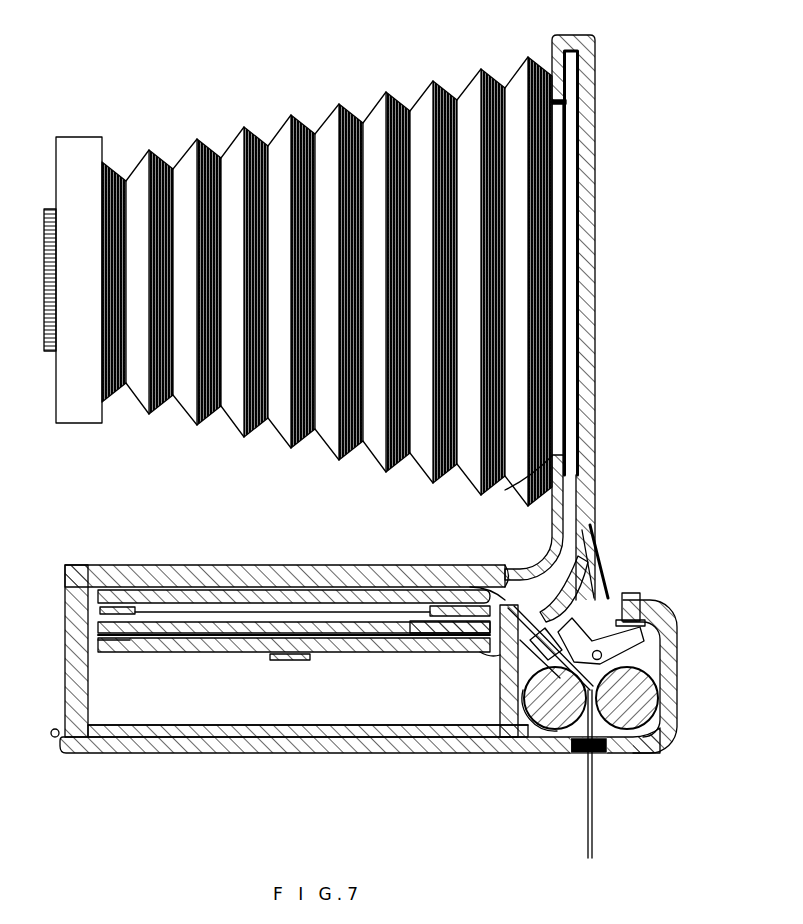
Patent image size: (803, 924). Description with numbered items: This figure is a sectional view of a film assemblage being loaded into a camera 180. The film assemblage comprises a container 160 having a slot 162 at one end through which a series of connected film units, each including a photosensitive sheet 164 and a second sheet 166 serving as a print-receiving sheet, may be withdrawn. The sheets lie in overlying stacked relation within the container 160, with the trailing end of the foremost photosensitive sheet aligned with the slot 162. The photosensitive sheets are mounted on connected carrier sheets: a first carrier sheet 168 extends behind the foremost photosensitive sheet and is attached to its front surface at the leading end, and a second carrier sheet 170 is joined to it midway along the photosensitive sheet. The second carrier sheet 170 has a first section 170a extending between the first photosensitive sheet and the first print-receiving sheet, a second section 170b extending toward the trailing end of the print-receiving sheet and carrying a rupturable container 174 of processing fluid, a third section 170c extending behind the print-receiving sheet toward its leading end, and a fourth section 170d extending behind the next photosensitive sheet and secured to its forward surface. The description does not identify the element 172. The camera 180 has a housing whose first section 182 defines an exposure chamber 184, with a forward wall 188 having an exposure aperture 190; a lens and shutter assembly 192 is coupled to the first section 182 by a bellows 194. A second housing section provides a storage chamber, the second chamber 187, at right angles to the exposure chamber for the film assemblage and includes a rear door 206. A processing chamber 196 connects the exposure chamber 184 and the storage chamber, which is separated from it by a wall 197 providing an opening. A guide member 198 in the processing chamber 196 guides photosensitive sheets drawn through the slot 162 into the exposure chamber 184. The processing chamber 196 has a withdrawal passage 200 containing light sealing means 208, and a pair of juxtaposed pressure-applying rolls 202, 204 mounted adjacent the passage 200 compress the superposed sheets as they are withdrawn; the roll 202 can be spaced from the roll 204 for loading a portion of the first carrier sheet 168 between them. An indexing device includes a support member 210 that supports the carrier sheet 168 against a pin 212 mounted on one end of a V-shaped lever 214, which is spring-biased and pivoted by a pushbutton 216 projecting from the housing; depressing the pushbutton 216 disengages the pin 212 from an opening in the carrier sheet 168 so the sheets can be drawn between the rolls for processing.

The container 160 is at (355, 664).
The slot 162 is at (513, 565).
The photosensitive sheet 164 is at (220, 620).
The second sheet 166 is at (299, 611).
The first carrier sheet 168 is at (594, 832).
The second carrier sheet 170 is at (330, 645).
The first section 170a is at (315, 606).
The second section 170b is at (397, 604).
The third section 170c is at (218, 654).
The fourth section 170d is at (150, 652).
The spacer plate 172 is at (175, 590).
The rupturable container 174 is at (455, 590).
The camera 180 is at (598, 713).
The first housing section 182 is at (561, 328).
The exposure chamber 184 is at (578, 375).
The second chamber 187 is at (245, 738).
The forward wall 188 is at (548, 100).
The exposure aperture 190 is at (566, 112).
The lens and shutter assembly 192 is at (92, 143).
The bellows 194 is at (260, 140).
The processing chamber 196 is at (598, 580).
The wall 197 is at (485, 660).
The guide member 198 is at (586, 553).
The withdrawal passage 200 is at (585, 755).
The pressure-applying roll 202 is at (555, 730).
The pressure-applying roll 204 is at (660, 735).
The rear door 206 is at (292, 754).
The light sealing means 208 is at (626, 748).
The support member 210 is at (520, 668).
The pin 212 is at (540, 682).
The V-shaped lever 214 is at (642, 636).
The pushbutton 216 is at (638, 598).